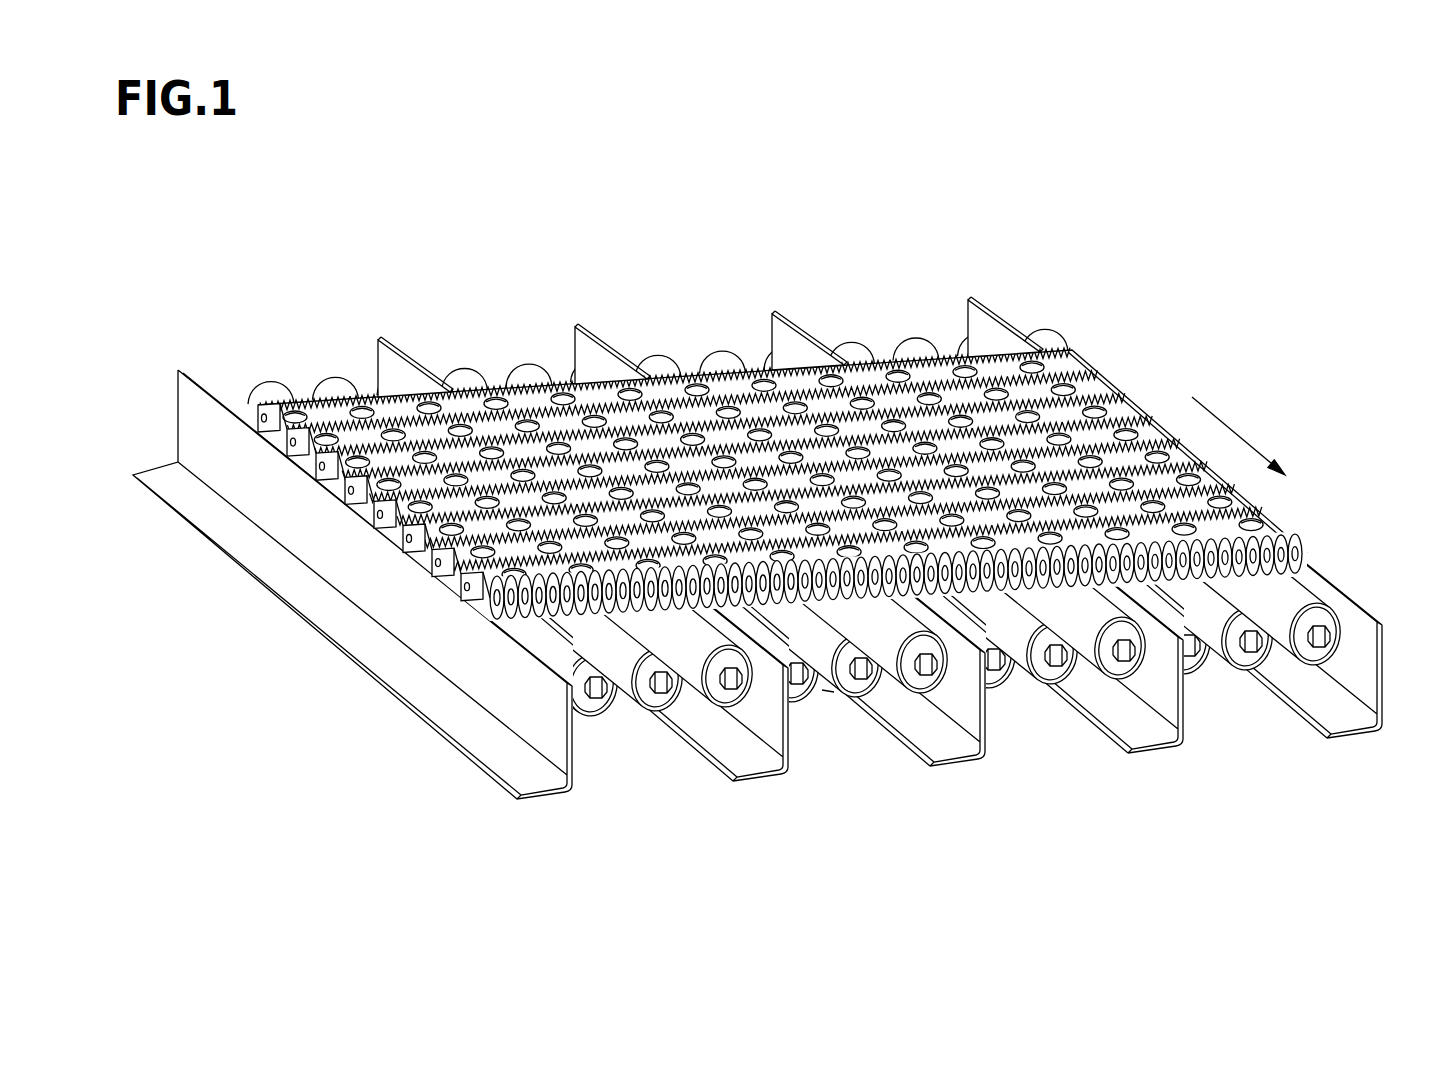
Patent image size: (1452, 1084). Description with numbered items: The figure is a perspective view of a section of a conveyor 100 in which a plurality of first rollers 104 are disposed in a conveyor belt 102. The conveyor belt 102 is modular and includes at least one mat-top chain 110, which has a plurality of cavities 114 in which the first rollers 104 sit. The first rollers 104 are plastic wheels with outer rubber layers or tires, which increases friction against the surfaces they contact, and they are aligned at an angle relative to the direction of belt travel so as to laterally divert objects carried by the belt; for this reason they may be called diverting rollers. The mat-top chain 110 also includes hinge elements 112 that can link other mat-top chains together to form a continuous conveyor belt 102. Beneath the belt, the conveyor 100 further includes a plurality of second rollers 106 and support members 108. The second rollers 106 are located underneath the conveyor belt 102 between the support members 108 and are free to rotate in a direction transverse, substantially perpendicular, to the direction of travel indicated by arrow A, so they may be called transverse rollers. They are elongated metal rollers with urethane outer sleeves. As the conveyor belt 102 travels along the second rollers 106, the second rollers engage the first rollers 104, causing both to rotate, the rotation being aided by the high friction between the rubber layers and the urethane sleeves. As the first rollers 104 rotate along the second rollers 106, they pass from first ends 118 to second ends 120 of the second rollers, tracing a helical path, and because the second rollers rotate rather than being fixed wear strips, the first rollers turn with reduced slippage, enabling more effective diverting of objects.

The conveyor 100 is at (821, 158).
The conveyor belt 102 is at (777, 515).
The first rollers 104 is at (566, 390).
The second rollers 106 is at (1319, 573).
The support members 108 is at (1362, 684).
The mat-top chain 110 is at (457, 572).
The hinge elements 112 is at (601, 626).
The cavities 114 is at (553, 384).
The first ends 118 is at (453, 385).
The second ends 120 is at (826, 690).